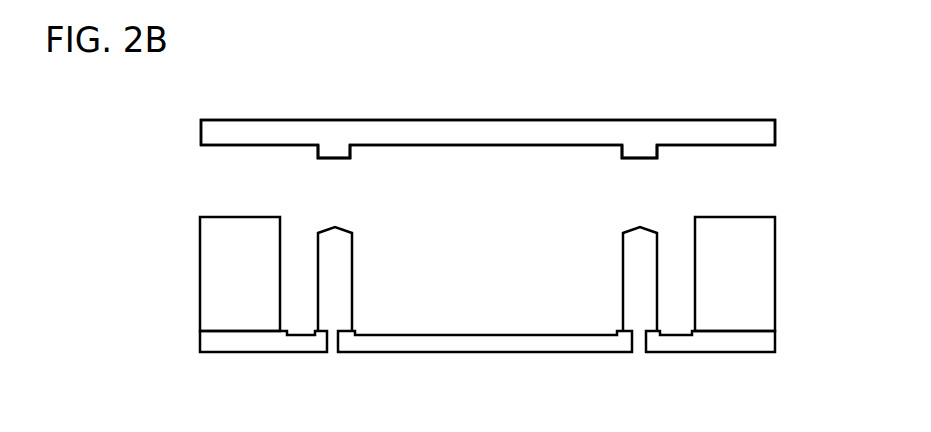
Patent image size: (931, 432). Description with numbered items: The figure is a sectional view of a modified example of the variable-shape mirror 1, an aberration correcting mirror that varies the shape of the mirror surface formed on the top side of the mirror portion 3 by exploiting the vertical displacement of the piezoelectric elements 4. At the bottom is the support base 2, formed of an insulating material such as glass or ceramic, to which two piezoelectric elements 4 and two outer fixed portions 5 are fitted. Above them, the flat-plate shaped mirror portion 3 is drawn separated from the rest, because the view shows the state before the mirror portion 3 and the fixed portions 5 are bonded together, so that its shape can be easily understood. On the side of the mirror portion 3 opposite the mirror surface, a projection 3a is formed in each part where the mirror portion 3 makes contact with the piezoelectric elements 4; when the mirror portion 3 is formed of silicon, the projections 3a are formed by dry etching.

The variable-shape mirror 1 is at (785, 84).
The support base 2 is at (730, 342).
The mirror portion 3 is at (595, 120).
The projection 3a is at (345, 152).
The piezoelectric element 4 is at (340, 279).
The fixed portion 5 is at (222, 280).